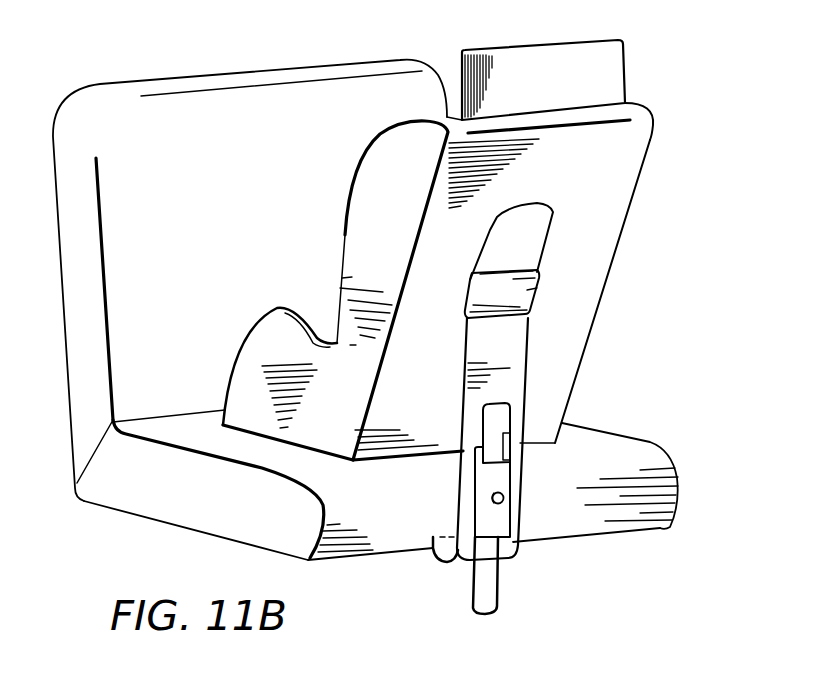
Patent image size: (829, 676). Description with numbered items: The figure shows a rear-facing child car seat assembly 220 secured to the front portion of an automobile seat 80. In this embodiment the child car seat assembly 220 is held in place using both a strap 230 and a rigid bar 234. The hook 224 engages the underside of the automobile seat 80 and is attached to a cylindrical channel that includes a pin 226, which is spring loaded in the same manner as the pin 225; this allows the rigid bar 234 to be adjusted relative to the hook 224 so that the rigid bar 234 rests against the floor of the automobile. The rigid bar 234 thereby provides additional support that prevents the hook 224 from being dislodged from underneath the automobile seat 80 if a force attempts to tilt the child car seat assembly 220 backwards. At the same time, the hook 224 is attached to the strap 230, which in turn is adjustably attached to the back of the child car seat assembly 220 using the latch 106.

The automobile seat 80 is at (163, 86).
The child car seat assembly 220 is at (630, 138).
The latch 106 is at (527, 290).
The strap 230 is at (518, 330).
The rigid bar 234 is at (497, 418).
The pin 226 is at (505, 498).
The pin 225 is at (490, 523).
The hook 224 is at (438, 563).